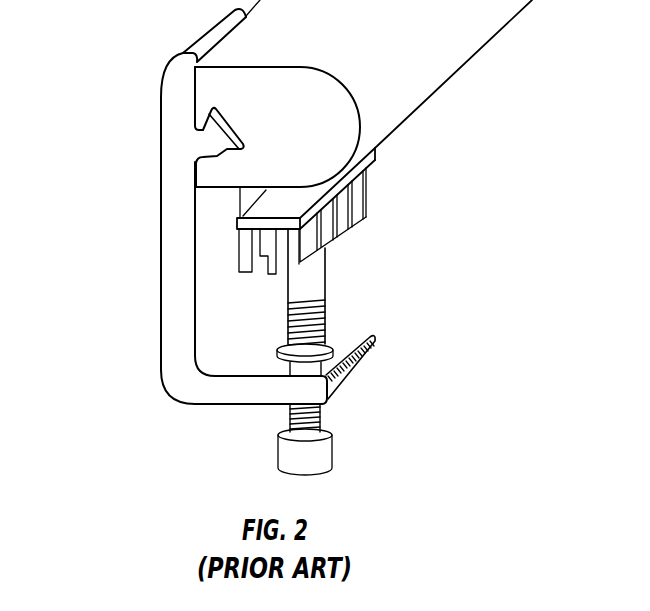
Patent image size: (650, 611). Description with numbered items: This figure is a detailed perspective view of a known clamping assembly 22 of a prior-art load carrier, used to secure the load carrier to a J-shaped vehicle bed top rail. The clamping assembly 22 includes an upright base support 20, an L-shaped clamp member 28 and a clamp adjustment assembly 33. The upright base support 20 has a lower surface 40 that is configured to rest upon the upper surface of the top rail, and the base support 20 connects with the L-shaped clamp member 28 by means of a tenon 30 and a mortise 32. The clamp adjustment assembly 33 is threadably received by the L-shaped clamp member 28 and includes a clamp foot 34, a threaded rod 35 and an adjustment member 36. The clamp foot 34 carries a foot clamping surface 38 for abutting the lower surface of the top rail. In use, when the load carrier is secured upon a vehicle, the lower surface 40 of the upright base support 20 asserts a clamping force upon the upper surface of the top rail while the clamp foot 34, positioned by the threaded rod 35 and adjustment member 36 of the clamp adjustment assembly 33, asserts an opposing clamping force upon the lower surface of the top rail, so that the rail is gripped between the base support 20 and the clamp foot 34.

The upright base support 20 is at (493, 20).
The clamping assembly 22 is at (225, 252).
The L-shaped clamp member 28 is at (172, 292).
The tenon 30 is at (212, 137).
The mortise 32 is at (223, 119).
The clamp adjustment assembly 33 is at (327, 323).
The clamp foot 34 is at (335, 218).
The threaded rod 35 is at (318, 273).
The adjustment member 36 is at (317, 457).
The foot clamping surface 38 is at (291, 208).
The lower surface 40 is at (250, 192).